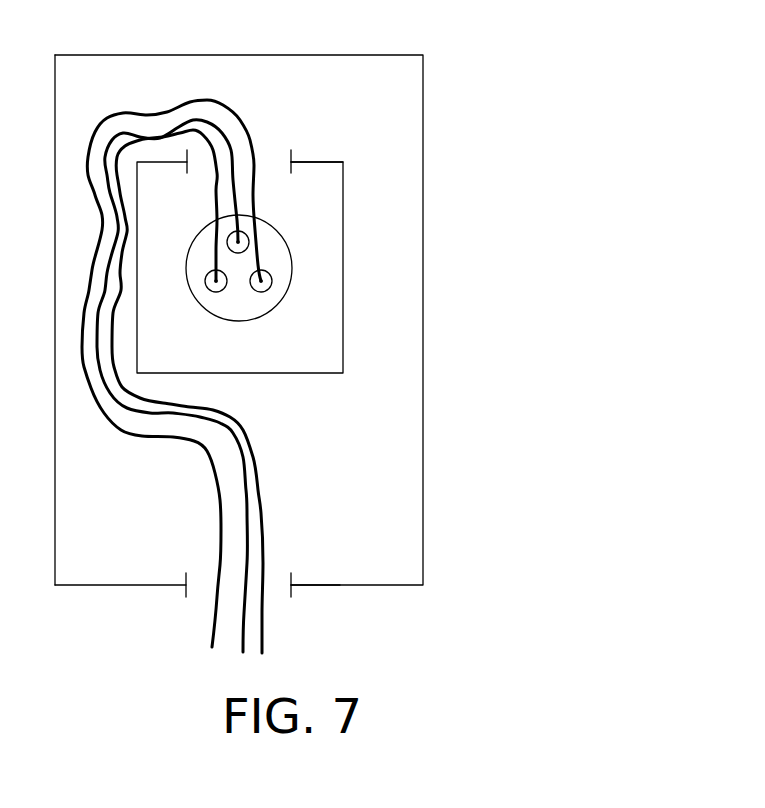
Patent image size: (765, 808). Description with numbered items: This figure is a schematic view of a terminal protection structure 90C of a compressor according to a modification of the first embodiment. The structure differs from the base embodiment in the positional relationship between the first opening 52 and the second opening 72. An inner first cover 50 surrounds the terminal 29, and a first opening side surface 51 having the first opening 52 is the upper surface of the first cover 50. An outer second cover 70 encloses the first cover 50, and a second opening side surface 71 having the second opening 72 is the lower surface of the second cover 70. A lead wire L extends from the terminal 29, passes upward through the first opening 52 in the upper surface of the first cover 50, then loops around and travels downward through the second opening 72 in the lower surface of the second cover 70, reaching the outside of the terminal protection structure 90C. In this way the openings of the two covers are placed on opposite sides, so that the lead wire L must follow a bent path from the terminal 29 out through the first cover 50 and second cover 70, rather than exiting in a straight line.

The terminal protection structure 90C is at (532, 108).
The second cover 70 is at (422, 332).
The second opening side surface 71 is at (315, 586).
The second opening 72 is at (291, 594).
The first cover 50 is at (322, 373).
The first opening side surface 51 is at (318, 162).
The first opening 52 is at (291, 158).
The terminal 29 is at (297, 233).
The lead wire L is at (240, 450).